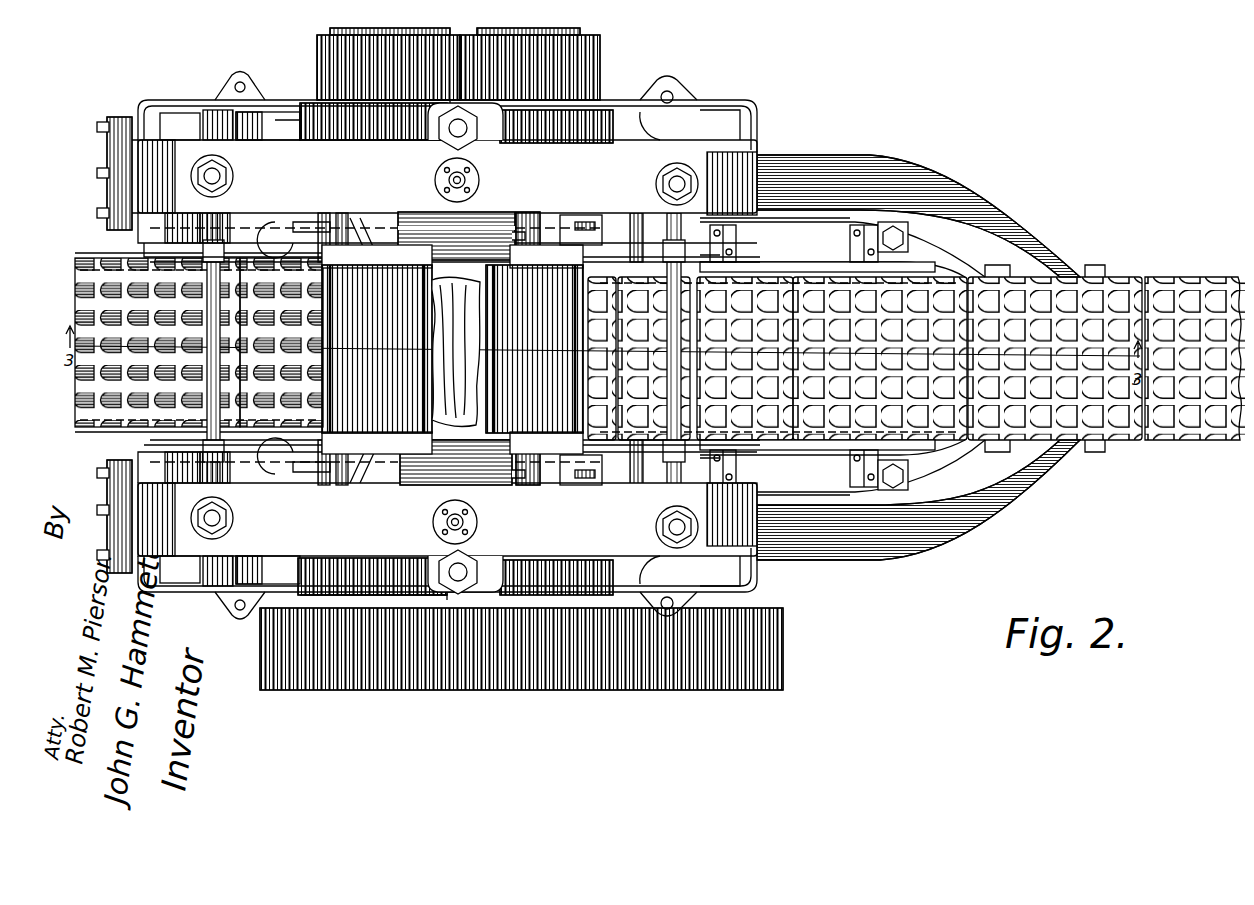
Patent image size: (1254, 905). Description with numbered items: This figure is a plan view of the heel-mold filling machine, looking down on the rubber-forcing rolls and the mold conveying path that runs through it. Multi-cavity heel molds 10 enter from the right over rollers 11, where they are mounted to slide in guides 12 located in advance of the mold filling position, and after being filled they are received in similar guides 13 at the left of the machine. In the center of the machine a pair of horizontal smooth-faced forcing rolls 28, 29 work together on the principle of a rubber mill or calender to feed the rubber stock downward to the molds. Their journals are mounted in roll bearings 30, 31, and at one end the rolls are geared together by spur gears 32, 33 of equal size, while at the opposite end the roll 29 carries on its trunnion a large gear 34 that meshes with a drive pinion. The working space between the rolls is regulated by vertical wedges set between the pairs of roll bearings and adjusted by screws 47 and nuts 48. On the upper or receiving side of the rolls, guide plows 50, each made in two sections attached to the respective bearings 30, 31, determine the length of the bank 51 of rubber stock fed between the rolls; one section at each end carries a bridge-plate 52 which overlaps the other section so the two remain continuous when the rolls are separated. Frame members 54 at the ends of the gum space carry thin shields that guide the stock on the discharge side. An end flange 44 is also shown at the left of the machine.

The multi-cavity heel mold 10 is at (100, 262).
The rollers 11 is at (937, 453).
The guides 12 is at (633, 250).
The guides 13 is at (253, 252).
The forcing roll 28 is at (375, 445).
The forcing roll 29 is at (530, 415).
The roll bearing 30 is at (308, 115).
The roll bearing 31 is at (607, 110).
The spur gear 32 is at (320, 46).
The spur gear 33 is at (585, 57).
The large gear 34 is at (603, 678).
The end flange 44 is at (138, 127).
The screws 47 is at (462, 178).
The nuts 48 is at (455, 178).
The guide plows 50 is at (365, 250).
The bank of rubber stock 51 is at (435, 257).
The bridge-plate 52 is at (468, 260).
The frame members 54 is at (510, 243).